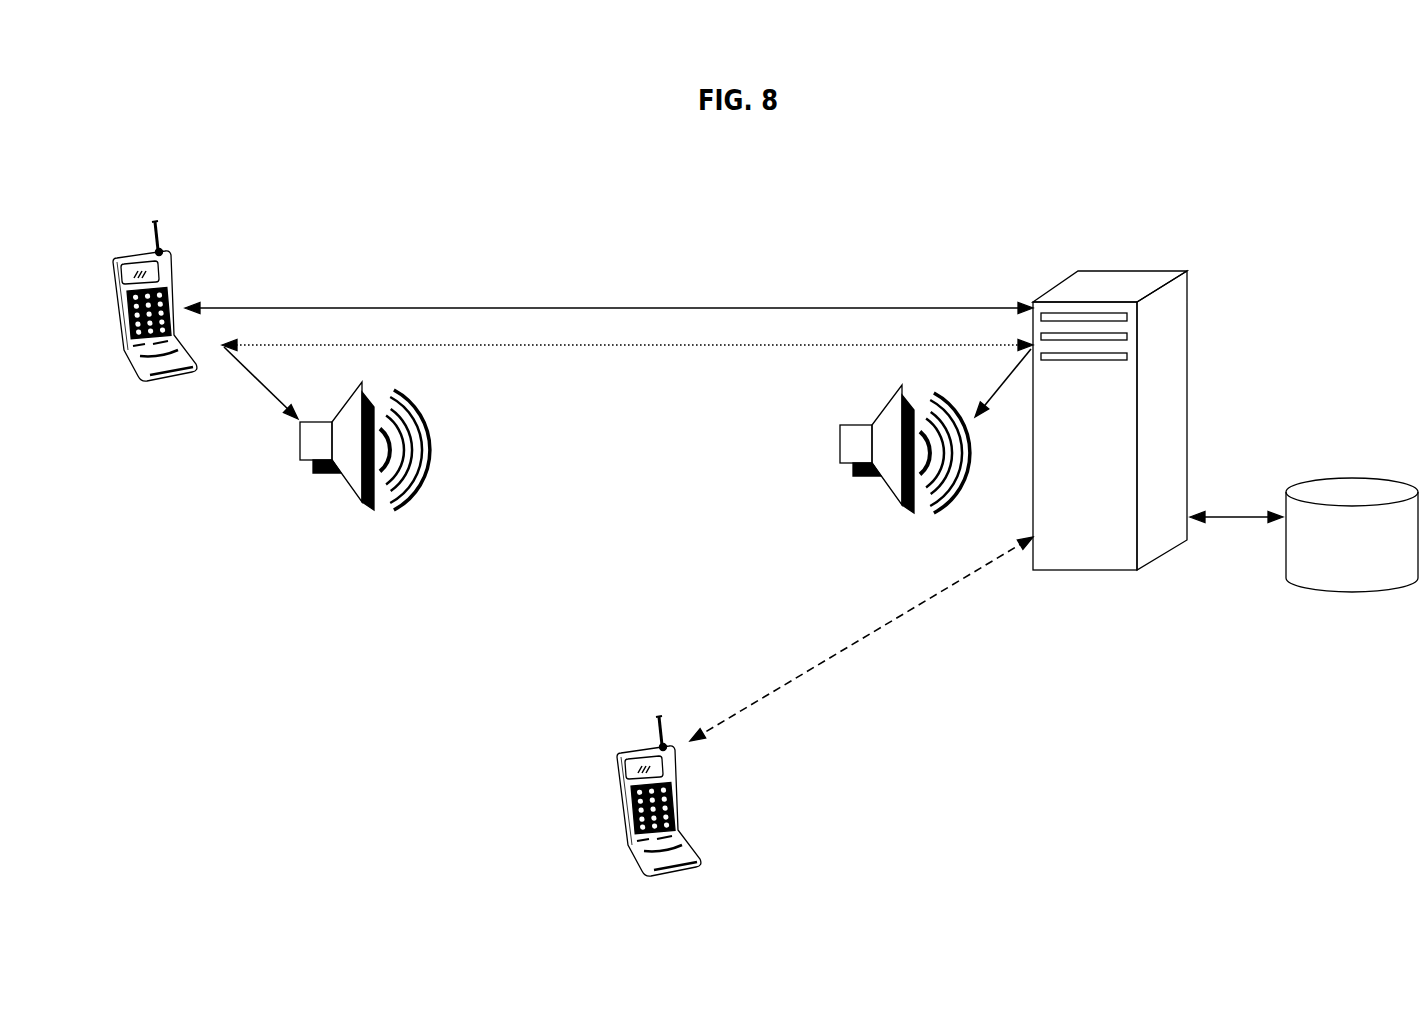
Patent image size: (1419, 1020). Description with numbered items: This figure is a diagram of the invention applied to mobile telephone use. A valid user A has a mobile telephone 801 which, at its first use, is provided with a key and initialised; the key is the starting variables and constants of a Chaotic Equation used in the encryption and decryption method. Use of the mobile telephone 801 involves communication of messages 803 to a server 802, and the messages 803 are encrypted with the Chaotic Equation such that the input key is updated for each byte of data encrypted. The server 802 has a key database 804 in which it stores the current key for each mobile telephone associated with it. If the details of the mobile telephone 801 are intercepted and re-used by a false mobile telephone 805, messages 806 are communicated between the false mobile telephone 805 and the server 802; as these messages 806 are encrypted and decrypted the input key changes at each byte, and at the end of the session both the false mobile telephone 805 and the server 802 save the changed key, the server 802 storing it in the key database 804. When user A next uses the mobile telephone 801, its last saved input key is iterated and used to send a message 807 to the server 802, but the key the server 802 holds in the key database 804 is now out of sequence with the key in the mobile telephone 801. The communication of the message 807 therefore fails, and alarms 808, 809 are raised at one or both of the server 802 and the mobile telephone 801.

The mobile telephone 801 is at (105, 306).
The server 802 is at (1150, 271).
The messages 803 is at (476, 308).
The key database 804 is at (1342, 478).
The false mobile telephone 805 is at (630, 795).
The messages 806 is at (803, 667).
The message 807 is at (610, 345).
The alarm 808 is at (840, 440).
The alarm 809 is at (300, 457).